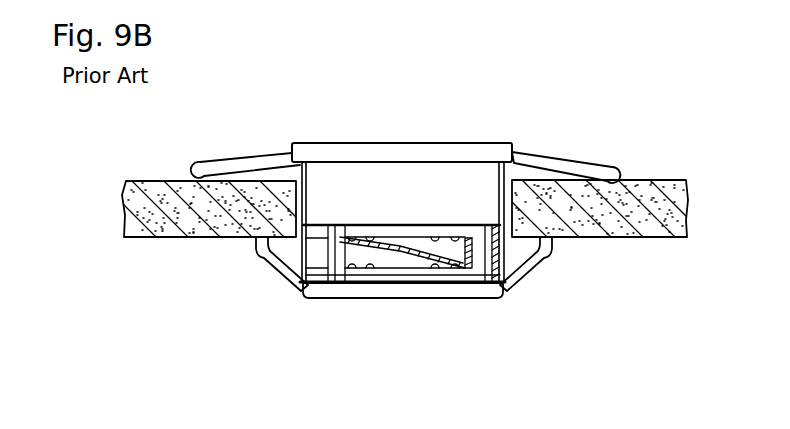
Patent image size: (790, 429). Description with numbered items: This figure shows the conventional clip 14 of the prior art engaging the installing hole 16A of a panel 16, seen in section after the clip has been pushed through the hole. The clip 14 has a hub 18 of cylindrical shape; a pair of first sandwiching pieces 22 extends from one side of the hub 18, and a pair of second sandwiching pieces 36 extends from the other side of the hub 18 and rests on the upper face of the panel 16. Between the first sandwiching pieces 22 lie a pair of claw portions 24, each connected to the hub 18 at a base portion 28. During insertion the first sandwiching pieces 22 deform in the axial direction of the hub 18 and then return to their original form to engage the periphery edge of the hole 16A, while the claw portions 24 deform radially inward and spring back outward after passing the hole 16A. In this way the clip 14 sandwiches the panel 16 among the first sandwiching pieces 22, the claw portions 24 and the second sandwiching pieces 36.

The conventional clip 14 is at (613, 106).
The panel 16 is at (662, 181).
The installing hole 16A is at (498, 197).
The hub 18 is at (528, 150).
The first sandwiching pieces 22 is at (274, 274).
The claw portions 24 is at (409, 284).
The base portion 28 is at (506, 266).
The second sandwiching pieces 36 is at (252, 157).